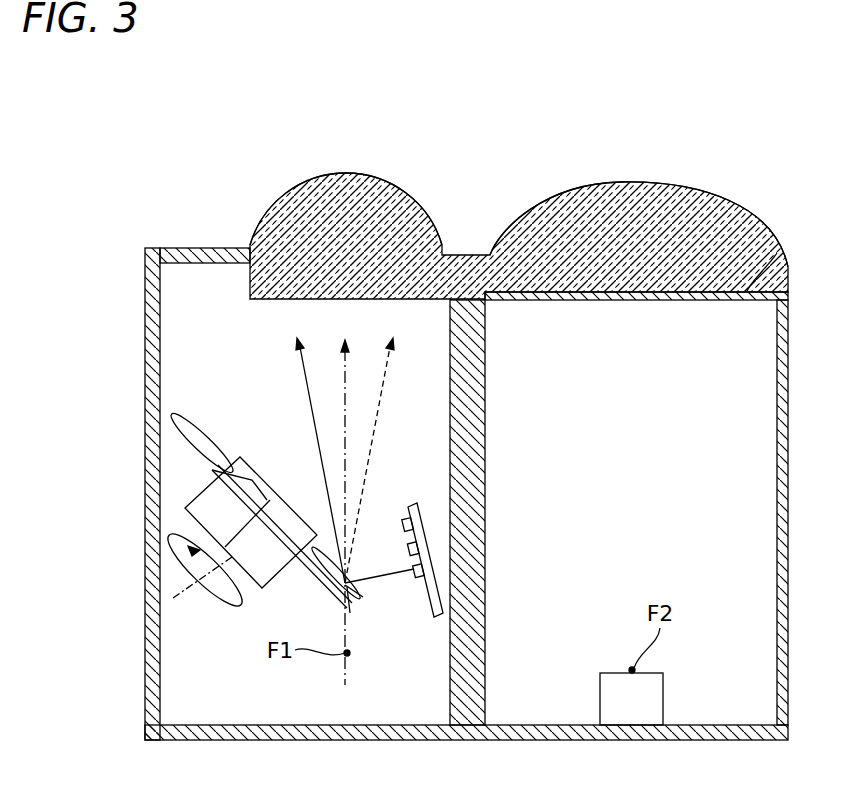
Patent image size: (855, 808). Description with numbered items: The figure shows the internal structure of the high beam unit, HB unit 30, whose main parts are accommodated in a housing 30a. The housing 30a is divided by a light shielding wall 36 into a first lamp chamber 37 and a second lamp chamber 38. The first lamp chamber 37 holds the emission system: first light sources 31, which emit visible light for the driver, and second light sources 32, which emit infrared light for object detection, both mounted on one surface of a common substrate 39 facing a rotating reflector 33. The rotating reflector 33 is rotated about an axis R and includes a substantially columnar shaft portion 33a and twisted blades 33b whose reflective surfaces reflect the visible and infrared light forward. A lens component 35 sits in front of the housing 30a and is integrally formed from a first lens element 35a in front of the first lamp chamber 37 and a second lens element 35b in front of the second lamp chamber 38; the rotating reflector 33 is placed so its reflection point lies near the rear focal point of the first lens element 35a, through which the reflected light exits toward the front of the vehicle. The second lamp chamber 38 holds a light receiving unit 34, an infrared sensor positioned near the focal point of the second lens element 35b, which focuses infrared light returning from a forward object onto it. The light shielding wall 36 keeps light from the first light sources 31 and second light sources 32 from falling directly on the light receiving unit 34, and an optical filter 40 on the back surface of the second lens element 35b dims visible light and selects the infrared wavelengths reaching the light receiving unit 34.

The HB unit 30 is at (422, 392).
The housing 30a is at (145, 433).
The first light sources 31 is at (389, 561).
The second light sources 32 is at (404, 548).
The rotating reflector 33 is at (262, 489).
The shaft portion 33a is at (264, 478).
The blades 33b is at (176, 414).
The light receiving unit 34 is at (663, 697).
The lens component 35 is at (477, 197).
The first lens element 35a is at (342, 165).
The second lens element 35b is at (647, 180).
The light shielding wall 36 is at (473, 678).
The first lamp chamber 37 is at (210, 341).
The second lamp chamber 38 is at (748, 340).
The common substrate 39 is at (421, 504).
The optical filter 40 is at (777, 253).